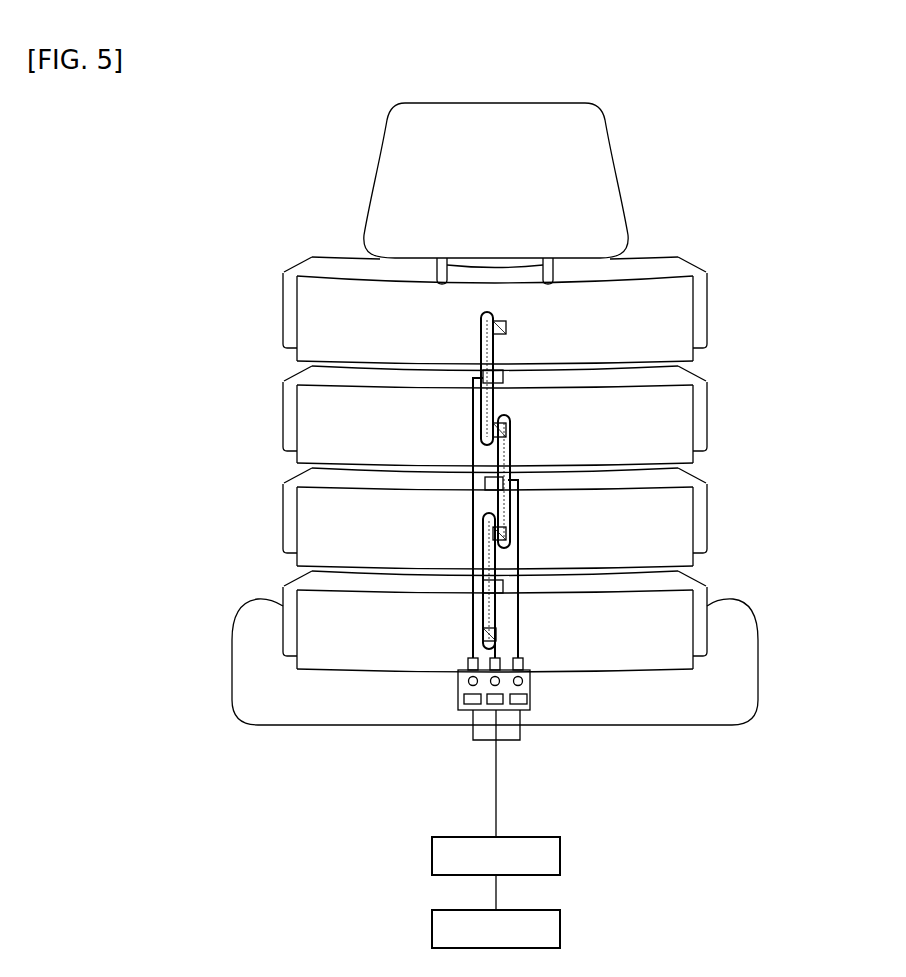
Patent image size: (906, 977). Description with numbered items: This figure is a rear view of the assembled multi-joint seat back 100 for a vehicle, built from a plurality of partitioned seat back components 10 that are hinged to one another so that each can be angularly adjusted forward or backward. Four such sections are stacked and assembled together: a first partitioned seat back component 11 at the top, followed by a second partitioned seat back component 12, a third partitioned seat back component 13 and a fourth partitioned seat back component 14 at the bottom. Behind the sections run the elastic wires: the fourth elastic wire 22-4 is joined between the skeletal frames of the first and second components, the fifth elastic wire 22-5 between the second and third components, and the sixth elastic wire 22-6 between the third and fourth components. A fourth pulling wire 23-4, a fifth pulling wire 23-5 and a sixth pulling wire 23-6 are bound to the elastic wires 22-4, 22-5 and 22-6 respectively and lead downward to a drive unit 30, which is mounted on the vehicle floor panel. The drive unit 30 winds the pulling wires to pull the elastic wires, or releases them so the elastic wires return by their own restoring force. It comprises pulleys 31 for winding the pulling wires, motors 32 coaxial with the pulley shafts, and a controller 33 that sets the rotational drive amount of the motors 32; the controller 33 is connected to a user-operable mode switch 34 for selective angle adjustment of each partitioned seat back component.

The seat back 100 is at (674, 222).
The partitioned seat back components 10 is at (165, 293).
The first partitioned seat back component 11 is at (268, 311).
The second partitioned seat back component 12 is at (268, 418).
The third partitioned seat back component 13 is at (268, 518).
The fourth partitioned seat back component 14 is at (268, 620).
The fourth elastic wire 22-4 is at (493, 352).
The fifth elastic wire 22-5 is at (511, 450).
The sixth elastic wire 22-6 is at (482, 562).
The fourth pulling wire 23-4 is at (472, 404).
The fifth pulling wire 23-5 is at (520, 513).
The sixth pulling wire 23-6 is at (498, 650).
The drive unit 30 is at (350, 729).
The pulleys 31 is at (468, 681).
The motors 32 is at (466, 704).
The controller 33 is at (432, 856).
The mode switch 34 is at (432, 927).